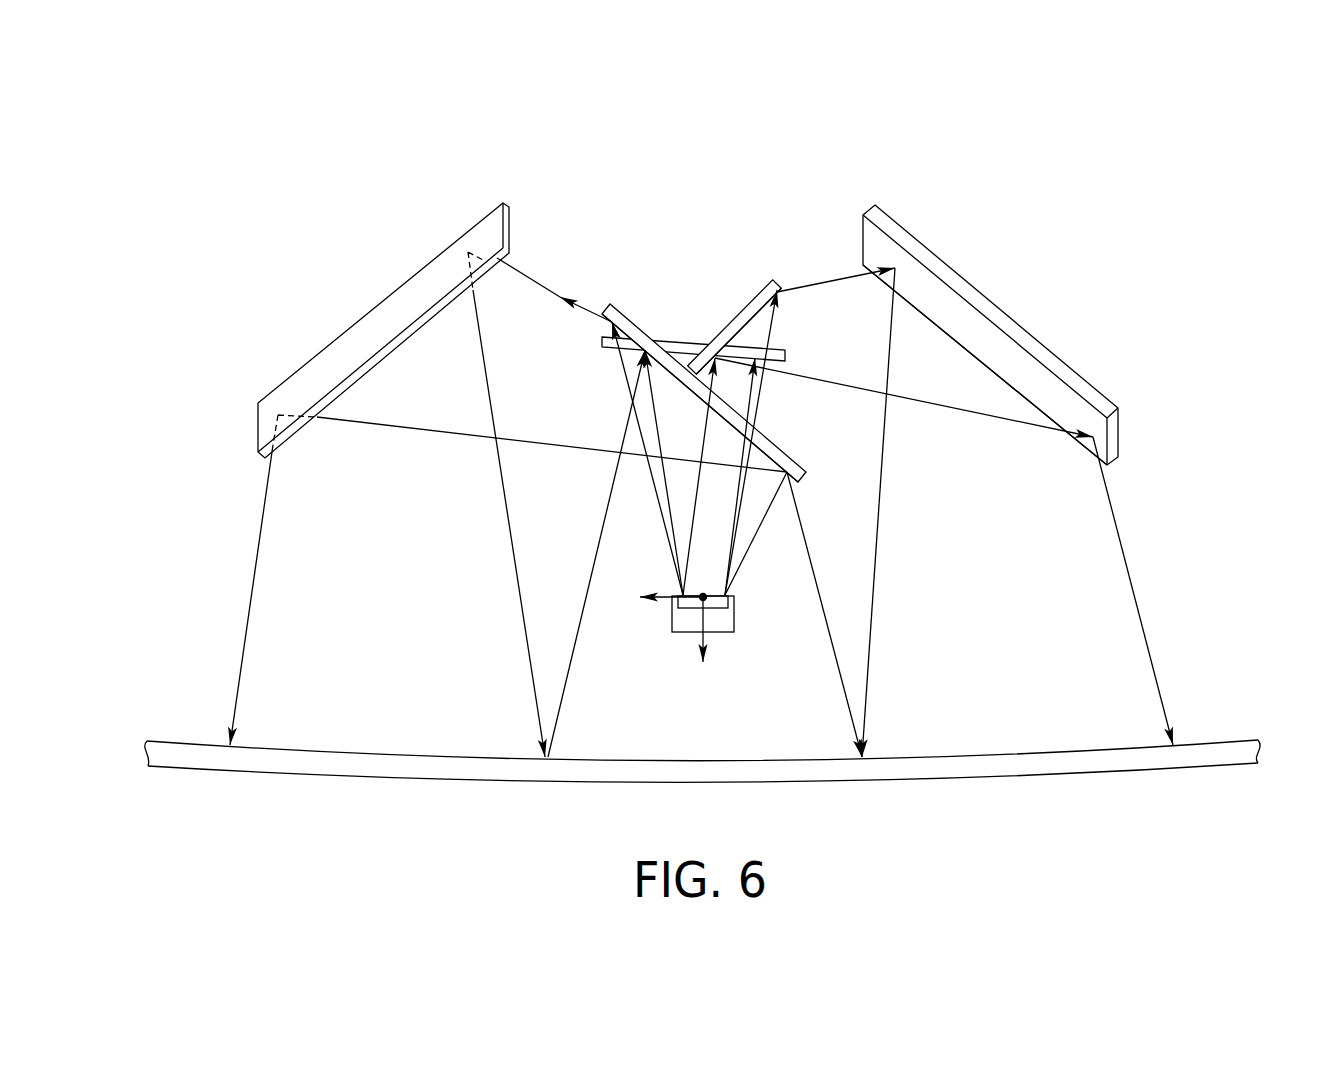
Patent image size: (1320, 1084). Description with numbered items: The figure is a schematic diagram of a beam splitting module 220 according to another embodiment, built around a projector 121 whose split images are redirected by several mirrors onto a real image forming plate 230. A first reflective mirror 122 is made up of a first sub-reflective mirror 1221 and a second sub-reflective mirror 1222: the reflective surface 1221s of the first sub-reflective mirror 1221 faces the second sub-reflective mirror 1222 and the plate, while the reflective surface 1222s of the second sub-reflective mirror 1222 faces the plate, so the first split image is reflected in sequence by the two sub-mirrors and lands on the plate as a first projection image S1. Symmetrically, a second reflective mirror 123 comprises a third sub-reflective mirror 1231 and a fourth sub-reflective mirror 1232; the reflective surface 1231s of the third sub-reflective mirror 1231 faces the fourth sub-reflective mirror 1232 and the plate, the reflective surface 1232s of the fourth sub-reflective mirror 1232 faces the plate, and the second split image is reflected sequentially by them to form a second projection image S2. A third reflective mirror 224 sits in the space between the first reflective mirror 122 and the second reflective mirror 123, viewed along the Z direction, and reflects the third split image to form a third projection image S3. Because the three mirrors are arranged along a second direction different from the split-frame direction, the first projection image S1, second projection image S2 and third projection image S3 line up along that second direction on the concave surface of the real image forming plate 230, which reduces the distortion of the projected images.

The beam splitting module 220 is at (1058, 221).
The projector 121 is at (683, 617).
The first reflective mirror 122 is at (473, 147).
The first sub-reflective mirror 1221 is at (614, 302).
The reflective surface of the first sub-reflective mirror 1221s is at (673, 380).
The second sub-reflective mirror 1222 is at (510, 227).
The reflective surface of the second sub-reflective mirror 1222s is at (303, 433).
The second reflective mirror 123 is at (768, 147).
The third sub-reflective mirror 1231 is at (777, 282).
The reflective surface of the third sub-reflective mirror 1231s is at (756, 313).
The fourth sub-reflective mirror 1232 is at (878, 215).
The reflective surface of the fourth sub-reflective mirror 1232s is at (1038, 390).
The third reflective mirror 224 is at (687, 348).
The real image forming plate 230 is at (950, 768).
The first projection image S1 is at (373, 750).
The second projection image S2 is at (1021, 748).
The third projection image S3 is at (706, 748).